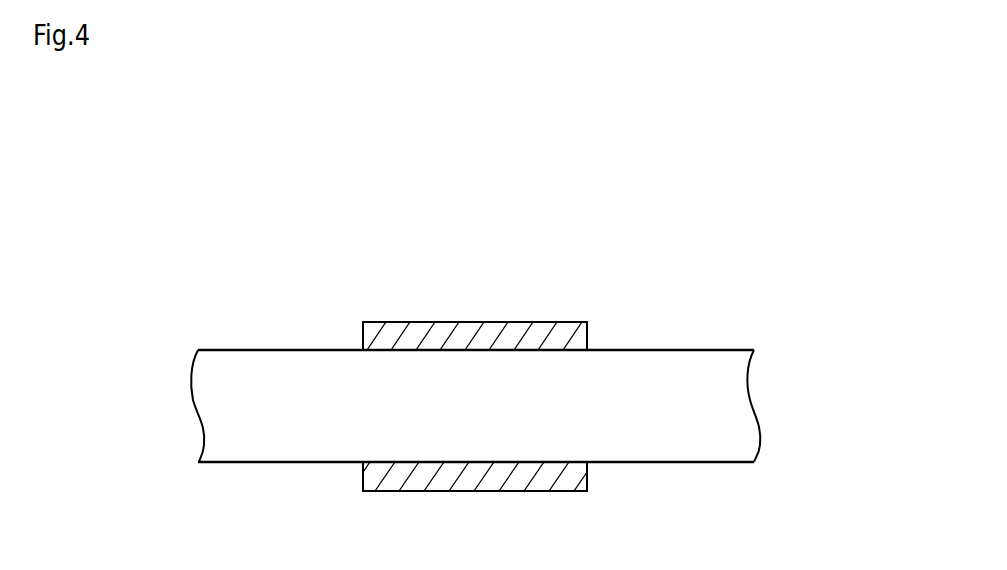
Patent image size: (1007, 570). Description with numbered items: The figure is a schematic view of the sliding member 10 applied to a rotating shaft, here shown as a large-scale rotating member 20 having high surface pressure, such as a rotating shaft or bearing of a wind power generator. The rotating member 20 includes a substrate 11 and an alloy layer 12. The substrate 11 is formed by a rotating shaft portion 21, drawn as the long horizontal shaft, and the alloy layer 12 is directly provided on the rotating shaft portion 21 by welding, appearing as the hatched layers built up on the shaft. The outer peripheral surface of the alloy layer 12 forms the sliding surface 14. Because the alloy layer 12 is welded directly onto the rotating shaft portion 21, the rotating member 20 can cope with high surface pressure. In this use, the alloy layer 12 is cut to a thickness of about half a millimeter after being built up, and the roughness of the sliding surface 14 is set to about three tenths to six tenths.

The sliding member 10 is at (585, 277).
The alloy layer 12 is at (516, 363).
The sliding surface 14 is at (398, 322).
The rotating member 20 is at (278, 335).
The substrate 11 is at (475, 444).
The rotating shaft portion 21 is at (280, 450).